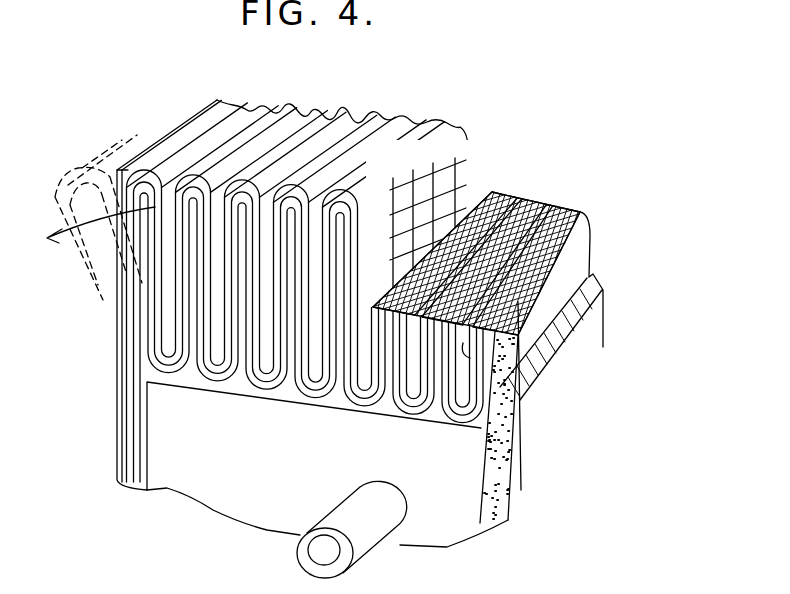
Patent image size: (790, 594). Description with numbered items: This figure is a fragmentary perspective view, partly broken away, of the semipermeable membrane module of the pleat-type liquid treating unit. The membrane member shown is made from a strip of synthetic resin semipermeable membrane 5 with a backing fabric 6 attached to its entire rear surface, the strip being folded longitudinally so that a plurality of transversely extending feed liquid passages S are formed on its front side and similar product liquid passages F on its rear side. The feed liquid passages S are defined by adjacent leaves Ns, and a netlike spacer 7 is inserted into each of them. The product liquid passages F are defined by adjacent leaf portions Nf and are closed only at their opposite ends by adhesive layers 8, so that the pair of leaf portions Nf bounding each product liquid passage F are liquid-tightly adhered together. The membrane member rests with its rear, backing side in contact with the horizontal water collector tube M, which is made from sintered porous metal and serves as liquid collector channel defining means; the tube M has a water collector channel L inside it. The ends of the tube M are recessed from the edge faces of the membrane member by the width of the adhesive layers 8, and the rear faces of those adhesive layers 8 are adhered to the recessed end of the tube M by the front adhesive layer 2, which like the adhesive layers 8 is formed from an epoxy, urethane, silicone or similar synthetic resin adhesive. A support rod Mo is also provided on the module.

The front adhesive layer 2 is at (160, 421).
The semipermeable membrane 5 is at (335, 168).
The backing fabric 6 is at (300, 210).
The netlike spacer 7 is at (467, 140).
The adhesive layer 8 is at (300, 196).
The feed liquid passage S is at (525, 198).
The product liquid passage F is at (513, 193).
The leaf portion Nf is at (585, 262).
The leaf Ns is at (463, 343).
The water collector channel L is at (597, 323).
The water collector tube M is at (520, 481).
The support rod Mo is at (355, 535).